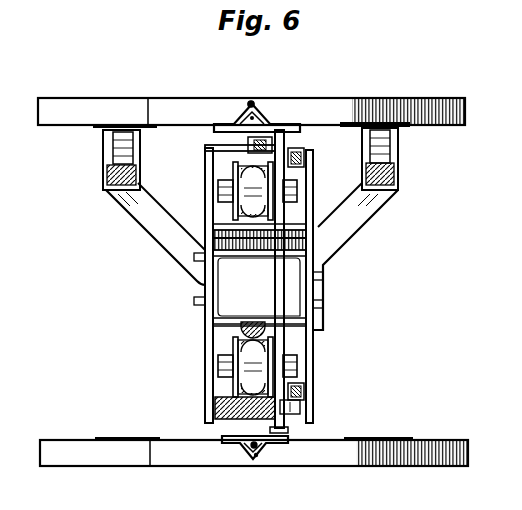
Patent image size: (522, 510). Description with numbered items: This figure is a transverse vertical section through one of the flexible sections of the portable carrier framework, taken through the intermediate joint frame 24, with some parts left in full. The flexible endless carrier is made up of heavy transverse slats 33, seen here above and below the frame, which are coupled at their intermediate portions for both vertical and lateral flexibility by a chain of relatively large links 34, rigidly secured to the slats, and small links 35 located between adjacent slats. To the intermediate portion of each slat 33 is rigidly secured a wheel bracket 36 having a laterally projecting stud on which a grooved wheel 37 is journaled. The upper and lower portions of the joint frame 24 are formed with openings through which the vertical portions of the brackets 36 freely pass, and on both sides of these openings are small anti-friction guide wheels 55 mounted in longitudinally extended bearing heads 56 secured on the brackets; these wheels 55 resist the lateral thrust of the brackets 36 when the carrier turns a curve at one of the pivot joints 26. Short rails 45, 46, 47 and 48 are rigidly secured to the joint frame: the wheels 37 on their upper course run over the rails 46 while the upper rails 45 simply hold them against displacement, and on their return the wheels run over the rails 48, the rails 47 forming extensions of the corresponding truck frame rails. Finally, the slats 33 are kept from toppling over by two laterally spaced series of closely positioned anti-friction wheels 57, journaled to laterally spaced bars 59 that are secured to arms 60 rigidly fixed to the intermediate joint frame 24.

The joint frame 24 is at (210, 303).
The pivot joints 26 is at (256, 252).
The transverse slats 33 is at (97, 0).
The large links 34 is at (238, 121).
The small links 35 is at (254, 102).
The wheel bracket 36 is at (286, 137).
The grooved wheel 37 is at (233, 192).
The short rails 45 is at (246, 171).
The short rails 46 is at (256, 246).
The short rails 47 is at (255, 330).
The short rails 48 is at (236, 400).
The anti-friction guide wheels 55 is at (250, 141).
The bearing heads 56 is at (244, 152).
The anti-friction wheels 57 is at (123, 145).
The bars 59 is at (112, 163).
The arms 60 is at (162, 228).